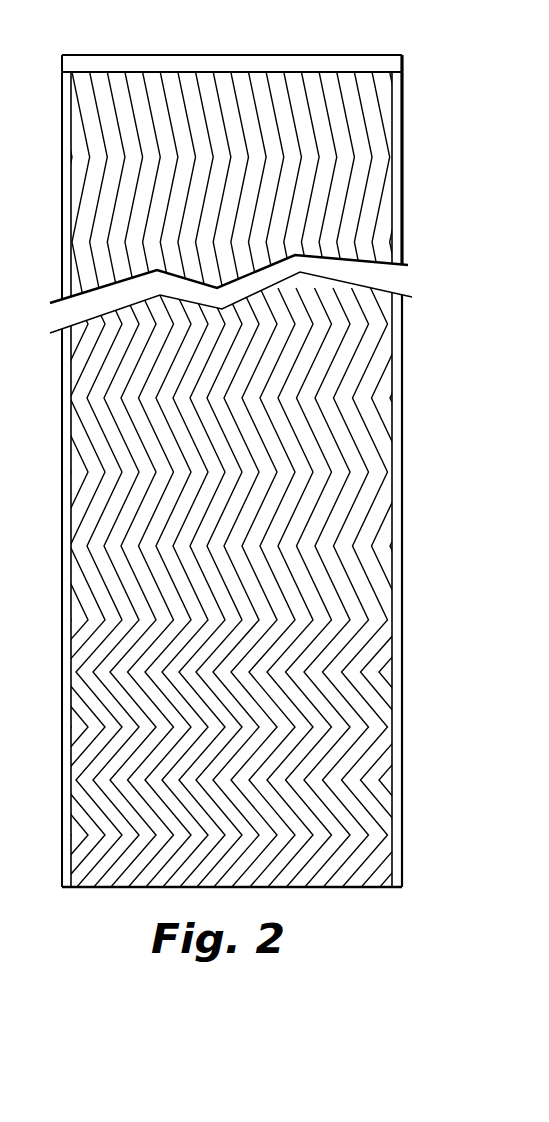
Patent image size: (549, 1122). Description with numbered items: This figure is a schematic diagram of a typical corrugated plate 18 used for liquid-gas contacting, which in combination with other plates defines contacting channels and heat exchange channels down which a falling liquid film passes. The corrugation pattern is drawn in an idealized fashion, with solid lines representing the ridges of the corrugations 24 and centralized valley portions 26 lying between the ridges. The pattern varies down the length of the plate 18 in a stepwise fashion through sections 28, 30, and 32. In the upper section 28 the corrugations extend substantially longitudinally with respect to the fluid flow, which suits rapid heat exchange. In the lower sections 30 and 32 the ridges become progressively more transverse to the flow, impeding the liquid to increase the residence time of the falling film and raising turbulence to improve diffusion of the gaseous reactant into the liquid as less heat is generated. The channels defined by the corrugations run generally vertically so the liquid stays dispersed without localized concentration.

The corrugated plate 18 is at (51, 524).
The ridges of the corrugations 24 is at (118, 128).
The valley portions 26 is at (330, 162).
The section of corrugation 28 is at (238, 222).
The section of corrugation 30 is at (263, 520).
The section of corrugation 32 is at (255, 795).